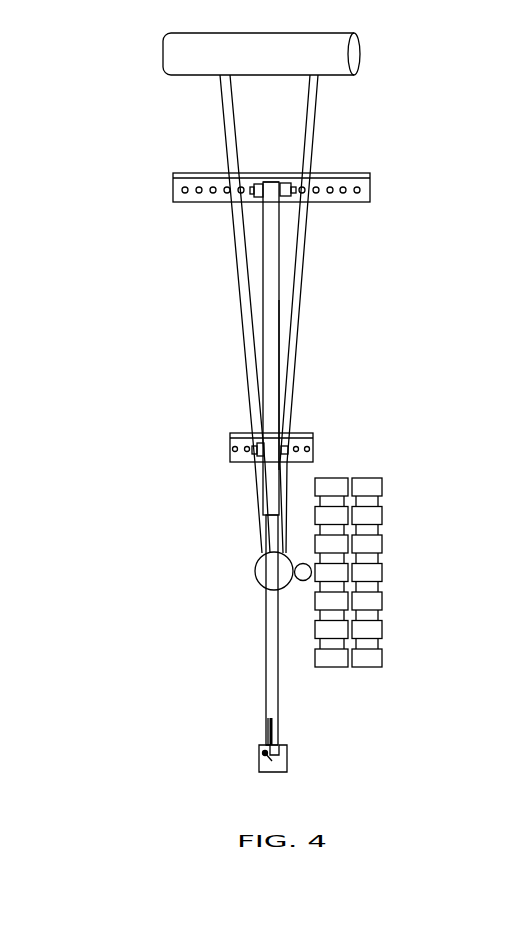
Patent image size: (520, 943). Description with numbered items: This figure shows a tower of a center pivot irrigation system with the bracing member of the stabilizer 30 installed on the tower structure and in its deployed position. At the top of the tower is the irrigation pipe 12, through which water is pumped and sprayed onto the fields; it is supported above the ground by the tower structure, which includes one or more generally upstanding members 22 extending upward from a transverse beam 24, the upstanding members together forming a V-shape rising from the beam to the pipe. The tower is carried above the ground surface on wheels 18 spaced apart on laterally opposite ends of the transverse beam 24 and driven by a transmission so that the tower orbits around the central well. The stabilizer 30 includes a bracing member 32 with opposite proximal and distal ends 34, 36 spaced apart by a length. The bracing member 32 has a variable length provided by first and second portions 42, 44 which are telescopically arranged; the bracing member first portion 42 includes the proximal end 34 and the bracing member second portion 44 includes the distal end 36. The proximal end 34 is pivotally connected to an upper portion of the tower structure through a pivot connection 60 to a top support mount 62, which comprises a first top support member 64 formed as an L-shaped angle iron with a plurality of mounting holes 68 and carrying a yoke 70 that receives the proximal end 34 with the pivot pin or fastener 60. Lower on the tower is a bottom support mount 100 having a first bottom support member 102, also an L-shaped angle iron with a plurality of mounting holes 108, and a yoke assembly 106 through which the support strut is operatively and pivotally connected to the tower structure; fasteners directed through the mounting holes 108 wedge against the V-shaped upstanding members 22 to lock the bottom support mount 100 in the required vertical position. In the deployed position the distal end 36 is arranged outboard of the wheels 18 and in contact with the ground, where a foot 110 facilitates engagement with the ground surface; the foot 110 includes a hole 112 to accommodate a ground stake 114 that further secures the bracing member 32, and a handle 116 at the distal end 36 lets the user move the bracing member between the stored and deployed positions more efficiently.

The irrigation pipe 12 is at (359, 53).
The upstanding members 22 is at (220, 105).
The top support mount 62 is at (249, 181).
The first top support member 64 is at (371, 188).
The mounting holes 68 is at (344, 193).
The pivot connection 60 is at (252, 189).
The yoke 70 is at (286, 183).
The stabilizer 30 is at (246, 465).
The bracing member first portion 42 is at (263, 337).
The bracing member 32 is at (279, 388).
The proximal end 34 is at (270, 197).
The bracing member second portion 44 is at (266, 637).
The distal end 36 is at (278, 748).
The bottom support mount 100 is at (307, 455).
The first bottom support member 102 is at (314, 448).
The yoke assembly 106 is at (283, 434).
The mounting holes 108 is at (307, 451).
The transverse beam 24 is at (255, 573).
The wheels 18 is at (383, 653).
The foot 110 is at (270, 744).
The hole 112 is at (272, 760).
The ground stake 114 is at (262, 746).
The handle 116 is at (272, 735).